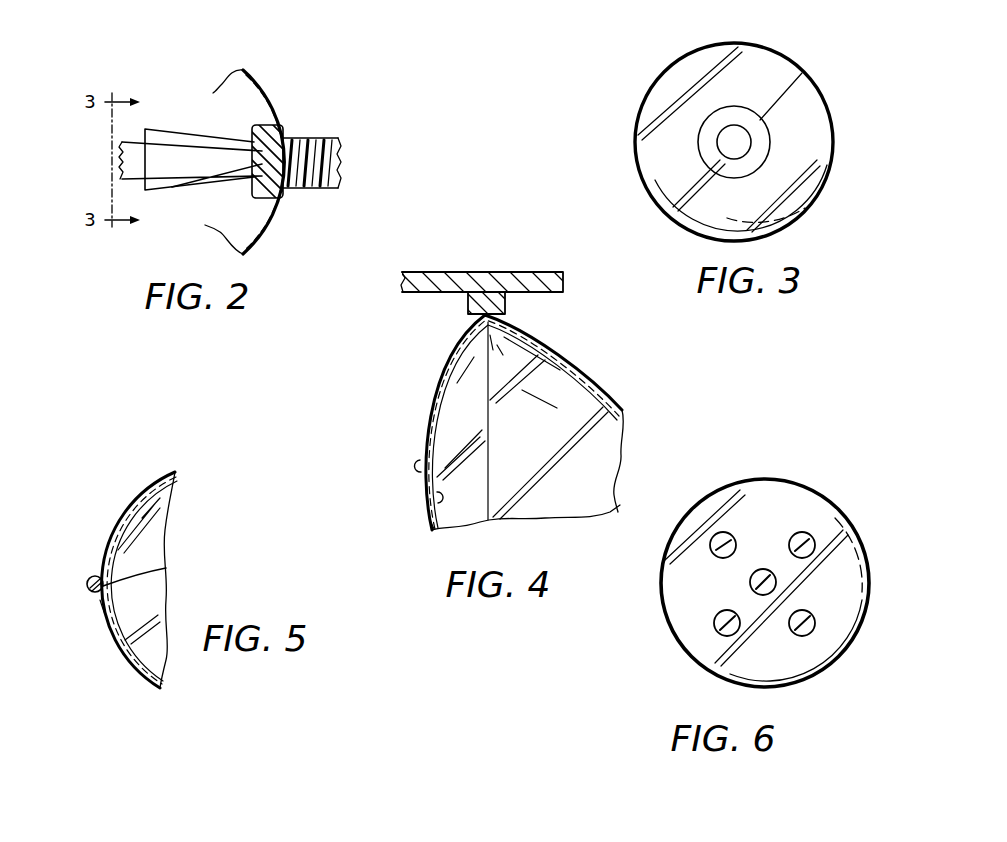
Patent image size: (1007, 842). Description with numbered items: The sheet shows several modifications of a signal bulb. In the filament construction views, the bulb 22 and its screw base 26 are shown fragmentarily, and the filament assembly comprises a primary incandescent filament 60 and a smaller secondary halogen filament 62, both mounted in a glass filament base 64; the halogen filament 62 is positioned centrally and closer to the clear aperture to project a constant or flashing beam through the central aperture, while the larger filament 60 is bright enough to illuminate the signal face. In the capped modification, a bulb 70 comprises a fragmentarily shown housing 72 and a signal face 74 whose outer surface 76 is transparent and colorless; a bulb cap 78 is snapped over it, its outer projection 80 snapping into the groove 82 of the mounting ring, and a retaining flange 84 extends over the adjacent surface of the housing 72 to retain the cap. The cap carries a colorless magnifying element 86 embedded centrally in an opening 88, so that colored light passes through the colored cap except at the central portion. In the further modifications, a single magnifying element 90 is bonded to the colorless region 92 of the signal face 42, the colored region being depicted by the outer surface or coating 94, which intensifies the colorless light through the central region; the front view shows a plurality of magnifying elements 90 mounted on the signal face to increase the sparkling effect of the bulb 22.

In FIG. 2, the bulb 22 is at (273, 89).
In FIG. 3, the bulb 22 is at (822, 88).
In FIG. 5, the bulb 22 is at (184, 502).
In FIG. 6, the bulb 22 is at (834, 496).
In FIG. 2, the screw base 26 is at (305, 189).
In FIG. 2, the primary incandescent filament 60 is at (170, 130).
In FIG. 3, the primary incandescent filament 60 is at (770, 148).
In FIG. 2, the secondary halogen filament 62 is at (175, 179).
In FIG. 3, the secondary halogen filament 62 is at (717, 137).
In FIG. 2, the glass filament base 64 is at (251, 199).
In FIG. 4, the bulb 70 is at (582, 404).
In FIG. 4, the housing 72 is at (555, 367).
In FIG. 4, the signal face 74 is at (432, 381).
In FIG. 4, the outer surface 76 is at (429, 511).
In FIG. 4, the bulb cap 78 is at (412, 432).
In FIG. 4, the outer projection 80 is at (483, 312).
In FIG. 4, the groove 82 is at (500, 298).
In FIG. 4, the retaining flange 84 is at (494, 350).
In FIG. 4, the magnifying element 86 is at (417, 468).
In FIG. 4, the opening 88 is at (434, 452).
In FIG. 5, the signal face 42 is at (150, 513).
In FIG. 5, the magnifying element 90 is at (86, 580).
In FIG. 6, the magnifying element 90 is at (762, 569).
In FIG. 5, the colorless region 92 is at (166, 568).
In FIG. 5, the outer surface or coating 94 is at (104, 612).